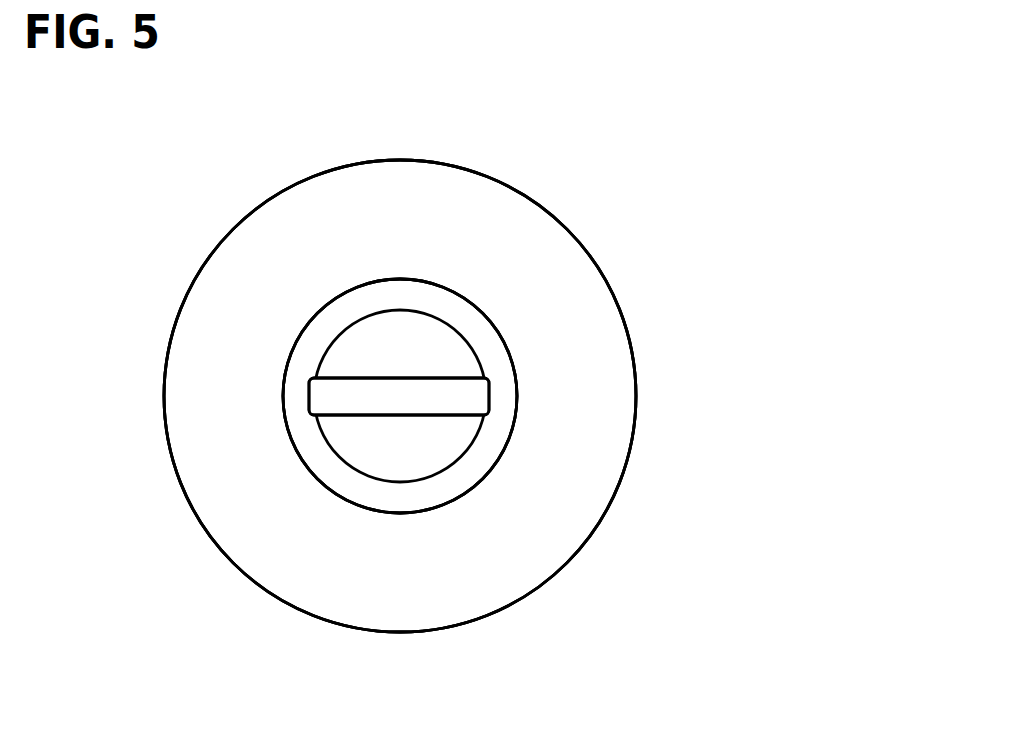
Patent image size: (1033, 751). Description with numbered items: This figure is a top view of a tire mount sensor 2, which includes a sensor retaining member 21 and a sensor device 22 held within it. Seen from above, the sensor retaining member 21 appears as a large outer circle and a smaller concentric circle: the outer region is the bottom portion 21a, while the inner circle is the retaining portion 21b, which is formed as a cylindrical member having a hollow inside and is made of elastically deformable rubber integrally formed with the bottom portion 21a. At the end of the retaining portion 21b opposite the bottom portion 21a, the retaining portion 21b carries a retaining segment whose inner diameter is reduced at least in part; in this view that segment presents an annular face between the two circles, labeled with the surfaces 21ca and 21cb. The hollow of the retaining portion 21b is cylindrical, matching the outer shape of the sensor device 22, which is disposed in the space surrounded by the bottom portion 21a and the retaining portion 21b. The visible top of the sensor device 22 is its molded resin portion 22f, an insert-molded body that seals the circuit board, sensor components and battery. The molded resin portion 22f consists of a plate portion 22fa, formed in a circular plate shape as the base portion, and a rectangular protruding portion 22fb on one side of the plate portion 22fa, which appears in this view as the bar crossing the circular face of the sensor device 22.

The tire mount sensor 2 is at (195, 228).
The sensor retaining member 21 is at (633, 272).
The bottom portion 21a is at (614, 492).
The retaining portion 21b is at (497, 462).
The first annular surface 21ca is at (340, 292).
The second annular surface 21cb is at (425, 300).
The sensor device 22 is at (448, 365).
The molded resin portion 22f is at (463, 676).
The plate portion 22fa is at (353, 442).
The rectangular protruding portion 22fb is at (415, 400).